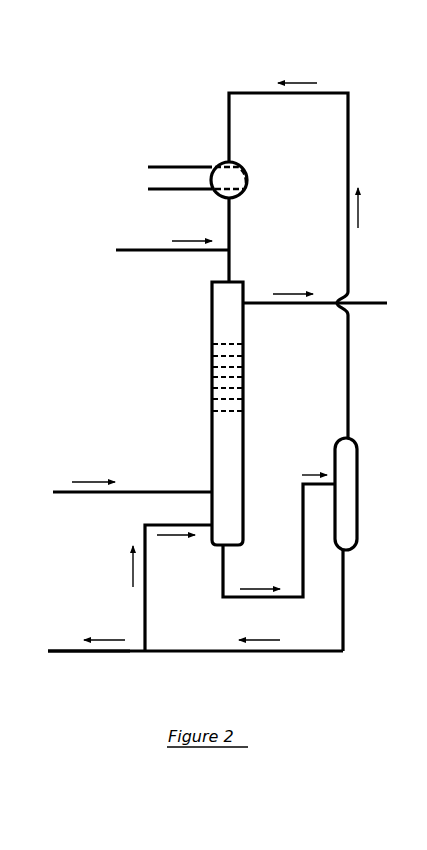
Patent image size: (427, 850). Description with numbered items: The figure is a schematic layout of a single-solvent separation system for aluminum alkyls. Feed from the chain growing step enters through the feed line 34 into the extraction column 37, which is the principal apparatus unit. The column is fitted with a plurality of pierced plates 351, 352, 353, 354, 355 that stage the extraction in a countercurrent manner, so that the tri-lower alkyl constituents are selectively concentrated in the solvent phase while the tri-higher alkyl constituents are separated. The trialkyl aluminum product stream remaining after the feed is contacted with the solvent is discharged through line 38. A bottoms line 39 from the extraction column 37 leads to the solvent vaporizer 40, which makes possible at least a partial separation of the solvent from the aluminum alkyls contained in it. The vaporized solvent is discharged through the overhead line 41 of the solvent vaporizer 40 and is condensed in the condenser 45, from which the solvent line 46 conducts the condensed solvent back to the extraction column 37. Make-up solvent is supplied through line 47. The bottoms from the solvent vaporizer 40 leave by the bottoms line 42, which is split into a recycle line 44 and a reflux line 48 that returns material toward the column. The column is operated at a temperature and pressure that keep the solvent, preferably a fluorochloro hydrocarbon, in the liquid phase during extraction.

The feed line 34 is at (138, 492).
The pierced plate 351 is at (212, 350).
The pierced plate 352 is at (235, 365).
The pierced plate 353 is at (212, 379).
The pierced plate 354 is at (225, 386).
The pierced plate 355 is at (217, 396).
The extraction column 37 is at (235, 467).
The product discharge line 38 is at (315, 323).
The bottoms line 39 is at (223, 584).
The solvent vaporizer 40 is at (357, 494).
The overhead line 41 is at (338, 93).
The bottoms line 42 is at (185, 651).
The recycle line 44 is at (90, 651).
The condenser 45 is at (248, 172).
The solvent line 46 is at (232, 268).
The make-up solvent line 47 is at (127, 250).
The reflux line 48 is at (146, 598).